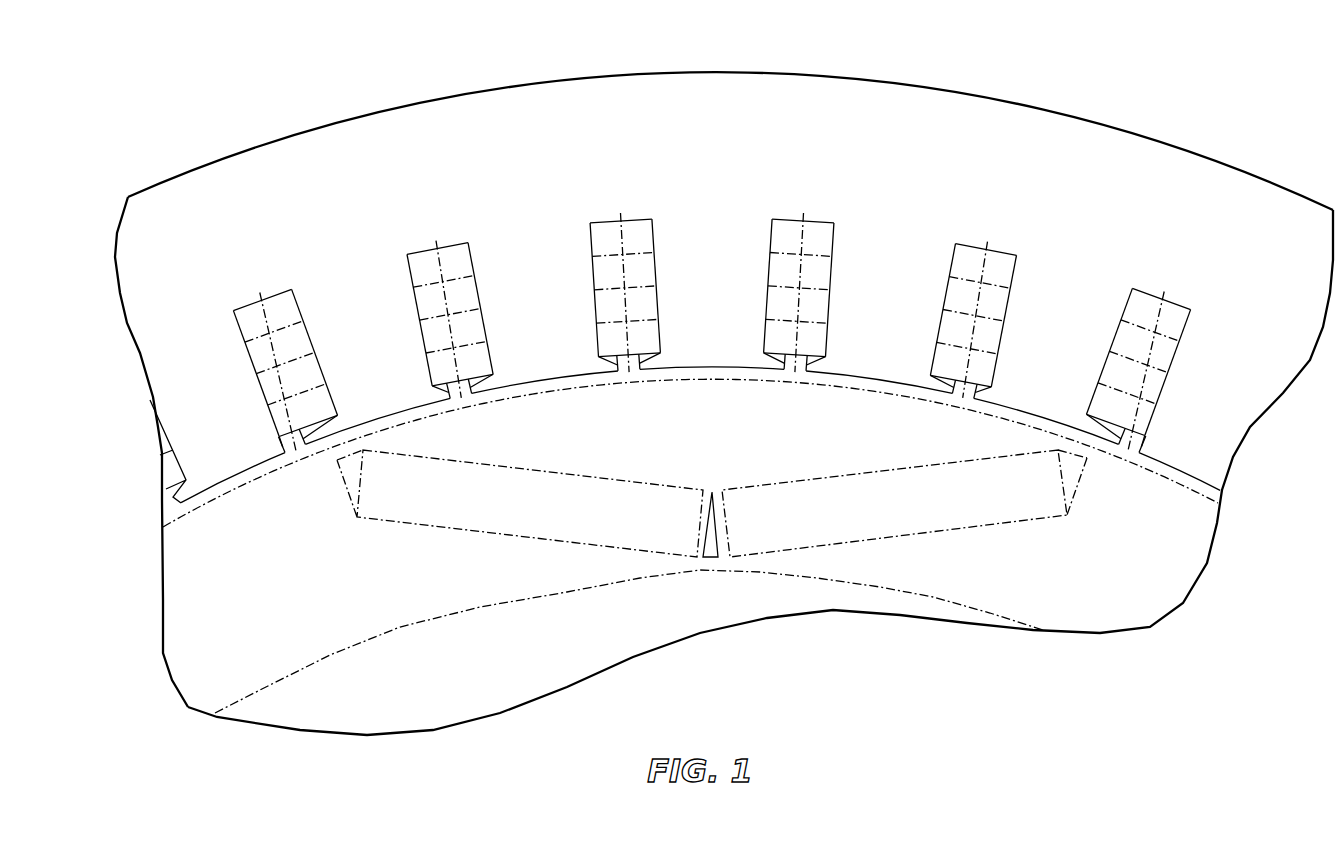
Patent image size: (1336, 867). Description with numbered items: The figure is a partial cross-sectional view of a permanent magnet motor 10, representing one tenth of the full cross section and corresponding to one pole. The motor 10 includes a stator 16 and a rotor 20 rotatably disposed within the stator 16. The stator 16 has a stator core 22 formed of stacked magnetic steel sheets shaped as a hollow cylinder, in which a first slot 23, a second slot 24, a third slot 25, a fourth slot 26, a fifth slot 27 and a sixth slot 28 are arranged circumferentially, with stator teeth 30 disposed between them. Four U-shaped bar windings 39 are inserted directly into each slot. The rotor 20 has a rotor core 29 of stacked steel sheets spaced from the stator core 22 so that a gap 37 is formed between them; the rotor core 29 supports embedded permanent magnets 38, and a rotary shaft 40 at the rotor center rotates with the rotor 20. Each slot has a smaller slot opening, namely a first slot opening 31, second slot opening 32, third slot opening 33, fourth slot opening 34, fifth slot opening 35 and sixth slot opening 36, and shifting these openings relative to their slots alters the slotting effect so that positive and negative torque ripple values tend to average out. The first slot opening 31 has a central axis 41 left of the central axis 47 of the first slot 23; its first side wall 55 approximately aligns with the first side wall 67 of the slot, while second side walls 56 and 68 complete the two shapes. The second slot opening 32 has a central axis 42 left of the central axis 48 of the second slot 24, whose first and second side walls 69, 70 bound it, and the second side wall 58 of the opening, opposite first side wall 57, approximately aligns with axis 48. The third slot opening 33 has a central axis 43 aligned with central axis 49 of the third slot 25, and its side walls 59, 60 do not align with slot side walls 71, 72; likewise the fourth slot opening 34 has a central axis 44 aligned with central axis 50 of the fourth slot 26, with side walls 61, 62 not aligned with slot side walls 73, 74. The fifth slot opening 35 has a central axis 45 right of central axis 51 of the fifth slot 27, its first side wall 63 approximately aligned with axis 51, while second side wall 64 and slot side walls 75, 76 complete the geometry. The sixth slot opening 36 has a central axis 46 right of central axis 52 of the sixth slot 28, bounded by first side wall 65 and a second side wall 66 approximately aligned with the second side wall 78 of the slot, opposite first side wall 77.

The permanent magnet motor 10 is at (887, 77).
The stator 16 is at (336, 142).
The rotor 20 is at (194, 642).
The stator core 22 is at (674, 126).
The first slot 23 is at (246, 303).
The second slot 24 is at (419, 247).
The third slot 25 is at (602, 214).
The fourth slot 26 is at (787, 213).
The fifth slot 27 is at (975, 238).
The sixth slot 28 is at (1151, 286).
The rotor core 29 is at (231, 612).
The stator teeth 30 is at (371, 347).
The first slot opening 31 is at (290, 454).
The second slot opening 32 is at (457, 404).
The third slot opening 33 is at (617, 378).
The fourth slot opening 34 is at (790, 380).
The fifth slot opening 35 is at (969, 400).
The sixth slot opening 36 is at (1133, 456).
The gap 37 is at (207, 497).
The permanent magnets 38 is at (513, 517).
The bar windings 39 is at (290, 307).
The rotary shaft 40 is at (411, 684).
The central axis of first slot opening 41 is at (303, 448).
The central axis of second slot opening 42 is at (467, 406).
The central axis of third slot opening 43 is at (633, 378).
The central axis of fourth slot opening 44 is at (808, 380).
The central axis of fifth slot opening 45 is at (960, 397).
The central axis of sixth slot opening 46 is at (1126, 448).
The central axis of first slot 47 is at (277, 300).
The central axis of second slot 48 is at (441, 256).
The central axis of third slot 49 is at (622, 232).
The central axis of fourth slot 50 is at (805, 232).
The central axis of fifth slot 51 is at (985, 260).
The central axis of sixth slot 52 is at (1161, 306).
The first side wall of first slot opening 55 is at (279, 446).
The second side wall of first slot opening 56 is at (322, 434).
The first side wall of second slot opening 57 is at (445, 400).
The second side wall of second slot opening 58 is at (490, 396).
The first side wall of third slot opening 59 is at (606, 371).
The second side wall of third slot opening 60 is at (648, 368).
The first side wall of fourth slot opening 61 is at (781, 372).
The second side wall of fourth slot opening 62 is at (820, 370).
The first side wall of fifth slot opening 63 is at (936, 386).
The second side wall of fifth slot opening 64 is at (986, 401).
The first side wall of sixth slot opening 65 is at (1110, 430).
The second side wall of sixth slot opening 66 is at (1147, 456).
The first side wall of first slot 67 is at (247, 358).
The second side wall of first slot 68 is at (331, 394).
The first side wall of second slot 69 is at (415, 310).
The second side wall of second slot 70 is at (494, 365).
The first side wall of third slot 71 is at (590, 256).
The second side wall of third slot 72 is at (664, 340).
The first side wall of fourth slot 73 is at (775, 252).
The second side wall of fourth slot 74 is at (834, 345).
The first side wall of fifth slot 75 is at (952, 262).
The second side wall of fifth slot 76 is at (993, 370).
The first side wall of sixth slot 77 is at (1130, 303).
The second side wall of sixth slot 78 is at (1163, 412).